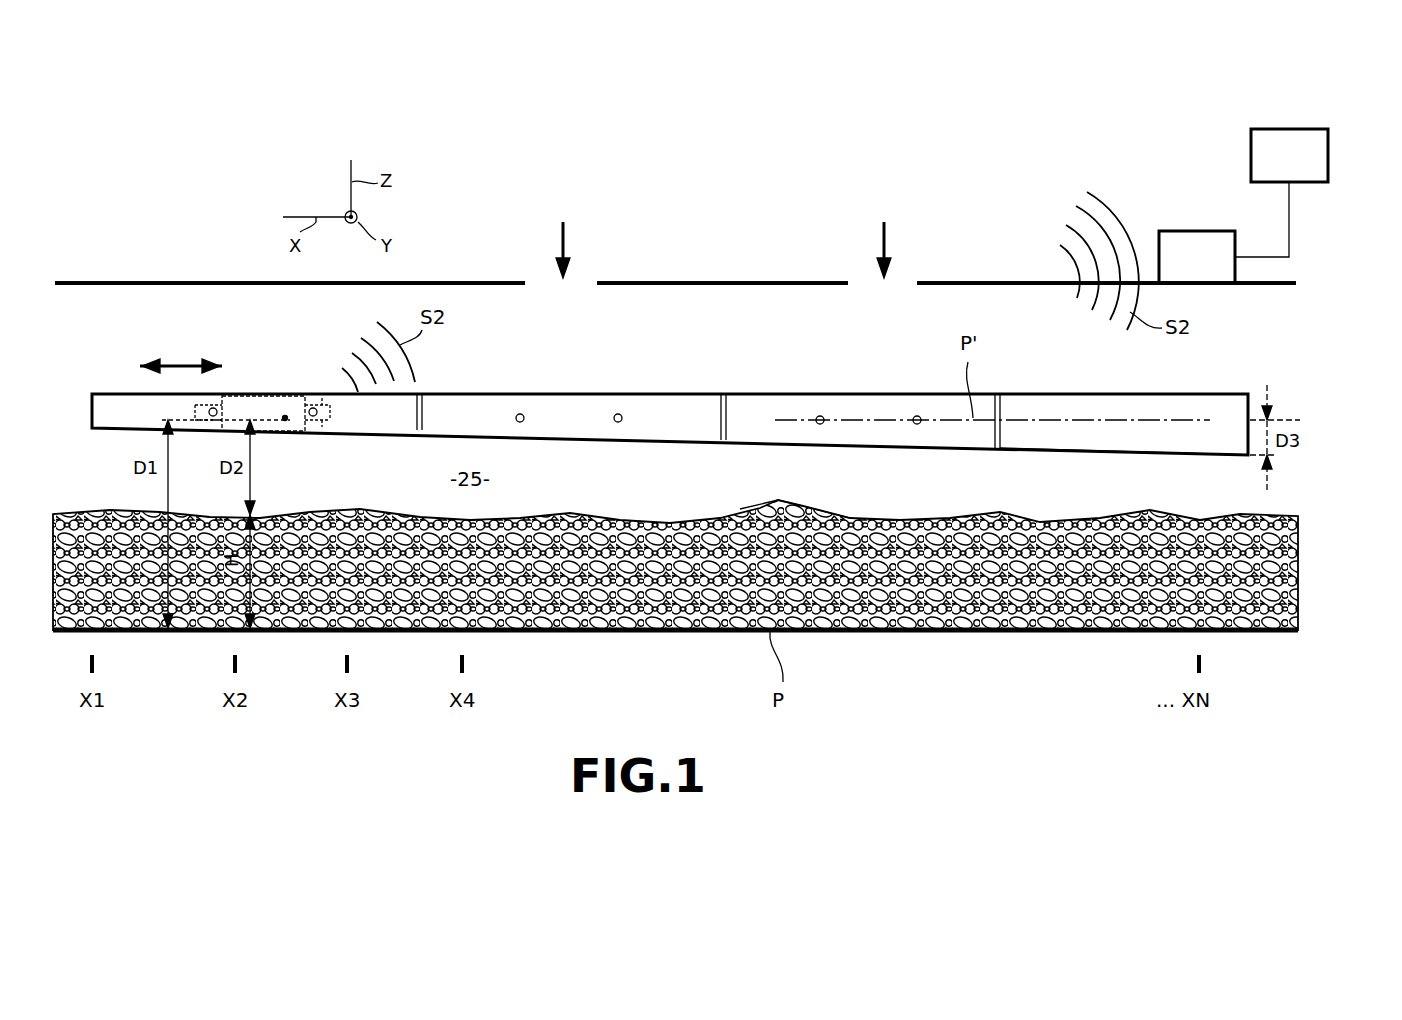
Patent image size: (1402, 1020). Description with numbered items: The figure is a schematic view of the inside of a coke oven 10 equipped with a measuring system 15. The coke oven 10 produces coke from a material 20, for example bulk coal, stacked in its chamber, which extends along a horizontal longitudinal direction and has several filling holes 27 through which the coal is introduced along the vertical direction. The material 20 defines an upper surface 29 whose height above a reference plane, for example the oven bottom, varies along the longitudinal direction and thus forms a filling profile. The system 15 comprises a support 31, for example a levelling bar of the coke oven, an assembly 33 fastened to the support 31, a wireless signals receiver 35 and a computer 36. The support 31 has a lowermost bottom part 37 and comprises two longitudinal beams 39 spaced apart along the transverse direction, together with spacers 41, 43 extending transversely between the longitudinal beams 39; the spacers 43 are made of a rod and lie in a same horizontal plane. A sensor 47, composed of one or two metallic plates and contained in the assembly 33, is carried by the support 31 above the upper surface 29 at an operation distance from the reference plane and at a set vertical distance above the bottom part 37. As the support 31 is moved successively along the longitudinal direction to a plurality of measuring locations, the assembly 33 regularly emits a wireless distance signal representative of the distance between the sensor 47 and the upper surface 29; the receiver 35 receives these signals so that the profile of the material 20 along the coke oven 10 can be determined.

The coke oven 10 is at (1061, 162).
The system 15 is at (90, 384).
The material 20 is at (1280, 508).
The filling holes 27 is at (865, 283).
The upper surface 29 is at (815, 494).
The support 31 is at (483, 393).
The assembly 33 is at (272, 388).
The wireless signals receiver 35 is at (1200, 240).
The computer 36 is at (1322, 155).
The bottom part 37 is at (1138, 460).
The longitudinal beams 39 is at (1200, 413).
The spacers 41 is at (727, 418).
The spacers 43 is at (614, 414).
The sensor 47 is at (285, 422).